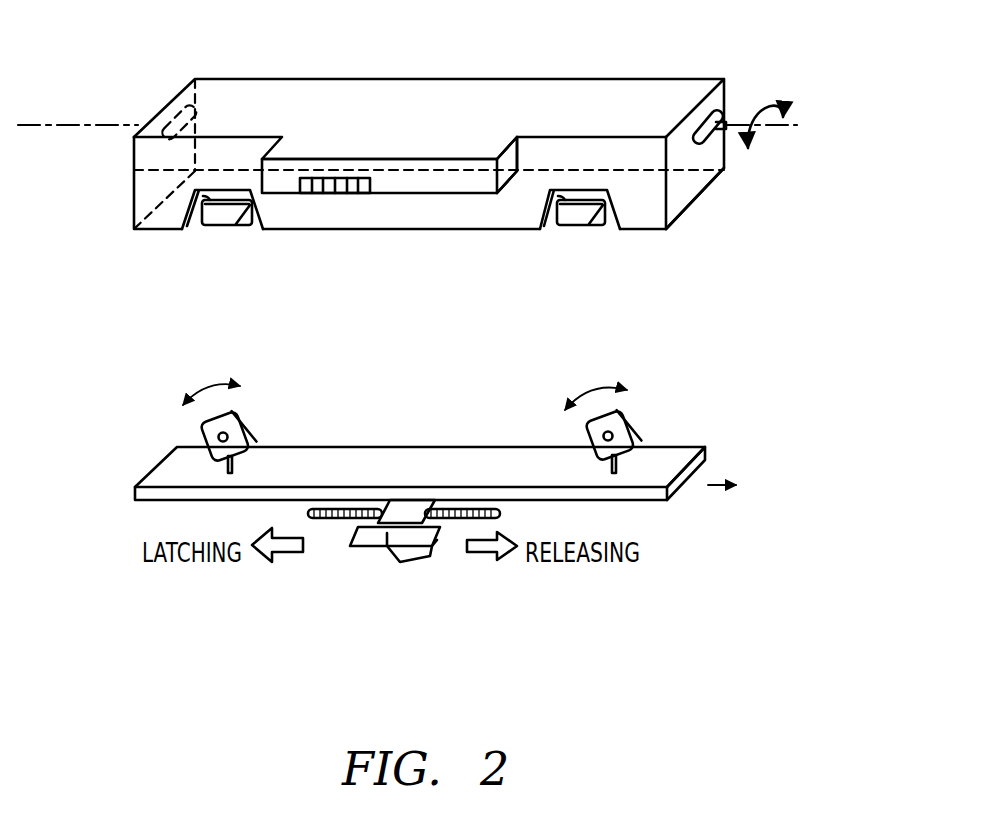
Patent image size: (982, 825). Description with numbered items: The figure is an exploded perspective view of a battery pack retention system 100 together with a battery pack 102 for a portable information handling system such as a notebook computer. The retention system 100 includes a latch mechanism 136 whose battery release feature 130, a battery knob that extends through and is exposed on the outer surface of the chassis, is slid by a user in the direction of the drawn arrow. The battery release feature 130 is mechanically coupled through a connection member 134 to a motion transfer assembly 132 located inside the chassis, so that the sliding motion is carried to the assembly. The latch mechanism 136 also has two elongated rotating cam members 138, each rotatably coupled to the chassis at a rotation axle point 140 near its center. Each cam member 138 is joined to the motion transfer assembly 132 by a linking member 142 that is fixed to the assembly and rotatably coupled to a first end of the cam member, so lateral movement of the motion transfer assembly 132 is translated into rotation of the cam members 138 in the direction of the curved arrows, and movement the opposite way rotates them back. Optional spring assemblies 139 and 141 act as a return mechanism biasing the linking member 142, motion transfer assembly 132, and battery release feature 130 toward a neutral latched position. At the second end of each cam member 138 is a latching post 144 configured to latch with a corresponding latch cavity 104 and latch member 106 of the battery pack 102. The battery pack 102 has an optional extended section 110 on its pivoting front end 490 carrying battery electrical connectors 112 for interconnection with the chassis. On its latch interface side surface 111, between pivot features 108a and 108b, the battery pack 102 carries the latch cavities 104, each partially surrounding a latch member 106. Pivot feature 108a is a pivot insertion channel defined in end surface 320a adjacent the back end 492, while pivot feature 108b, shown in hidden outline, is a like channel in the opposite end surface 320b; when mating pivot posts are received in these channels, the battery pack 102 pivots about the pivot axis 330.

The battery pack retention system 100 is at (90, 600).
The battery pack 102 is at (177, 93).
The latch cavity 104 is at (192, 226).
The latch member 106 is at (217, 220).
The pivot feature 108a is at (717, 127).
The pivot feature 108b is at (170, 122).
The extended section 110 is at (515, 157).
The latch interface side surface 111 is at (145, 190).
The battery electrical connectors 112 is at (335, 178).
The battery release feature 130 is at (387, 533).
The motion transfer assembly 132 is at (630, 477).
The connection member 134 is at (400, 510).
The latch mechanism 136 is at (135, 490).
The rotating cam member 138 is at (205, 425).
The spring assembly 139 is at (343, 520).
The rotation axle point 140 is at (218, 437).
The spring assembly 141 is at (465, 520).
The linking member 142 is at (226, 470).
The latching post 144 is at (247, 417).
The end surface 320a is at (692, 188).
The end surface 320b is at (133, 170).
The pivot axis 330 is at (797, 125).
The pivoting front end 490 is at (407, 165).
The back end 492 is at (720, 117).